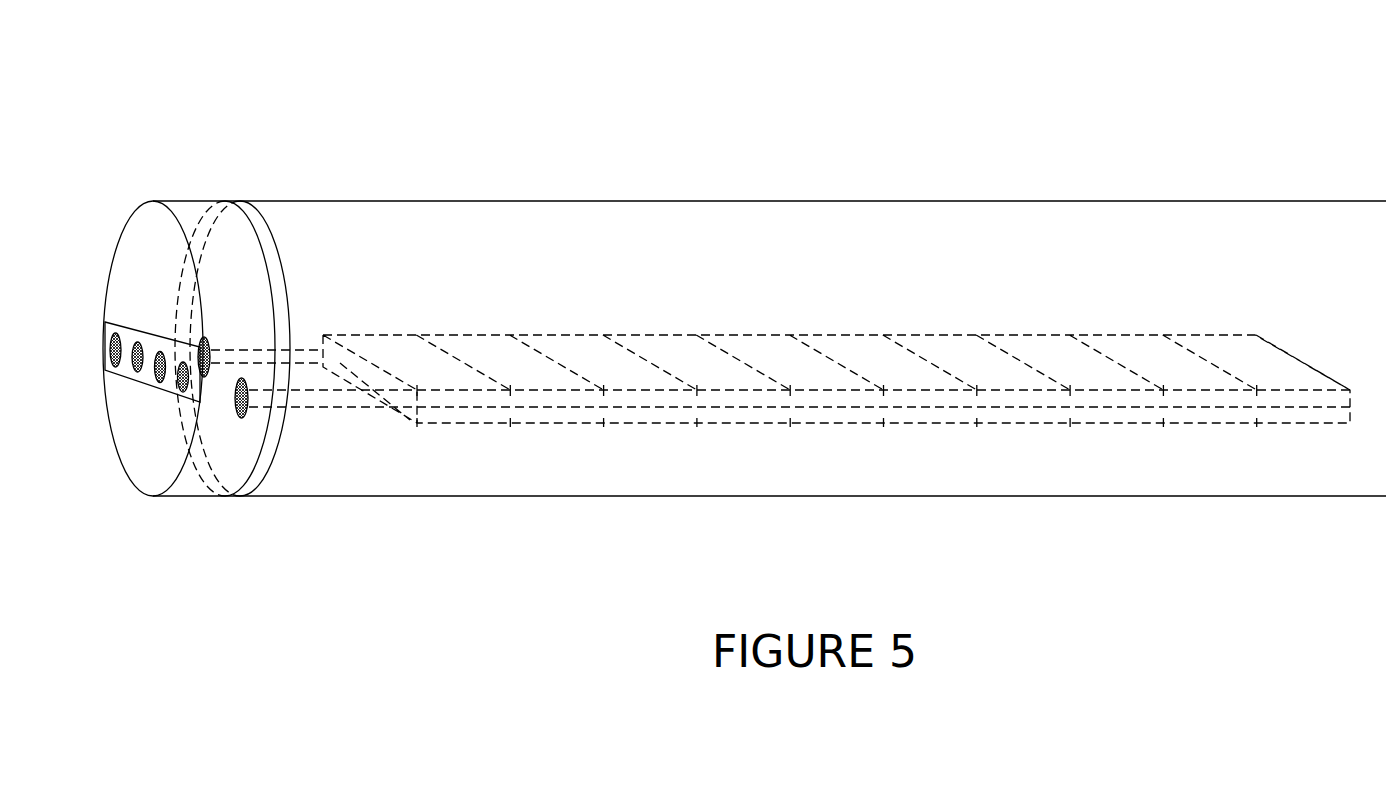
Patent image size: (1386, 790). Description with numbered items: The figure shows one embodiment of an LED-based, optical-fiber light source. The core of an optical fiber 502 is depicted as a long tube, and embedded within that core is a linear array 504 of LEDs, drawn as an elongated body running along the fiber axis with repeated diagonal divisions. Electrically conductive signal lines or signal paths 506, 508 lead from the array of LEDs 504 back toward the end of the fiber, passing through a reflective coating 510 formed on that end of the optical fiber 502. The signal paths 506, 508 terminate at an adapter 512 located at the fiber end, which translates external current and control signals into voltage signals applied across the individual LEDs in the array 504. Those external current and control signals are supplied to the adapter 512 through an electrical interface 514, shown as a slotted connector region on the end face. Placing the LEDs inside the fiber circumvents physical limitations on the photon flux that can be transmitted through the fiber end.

The optical fiber 502 is at (885, 195).
The linear array of LEDs 504 is at (480, 328).
The signal line 506 is at (298, 348).
The signal line 508 is at (317, 400).
The reflective coating 510 is at (251, 205).
The adapter 512 is at (177, 493).
The electrical interface 514 is at (128, 338).